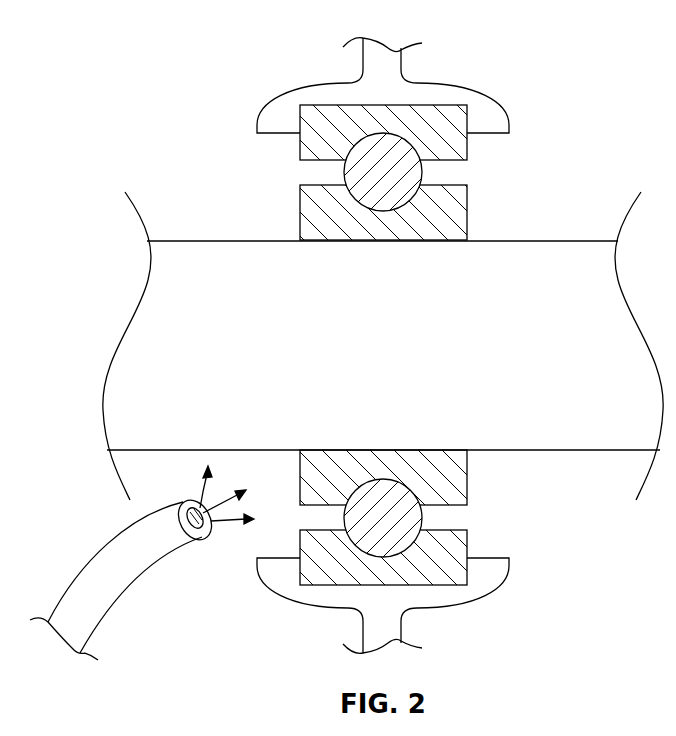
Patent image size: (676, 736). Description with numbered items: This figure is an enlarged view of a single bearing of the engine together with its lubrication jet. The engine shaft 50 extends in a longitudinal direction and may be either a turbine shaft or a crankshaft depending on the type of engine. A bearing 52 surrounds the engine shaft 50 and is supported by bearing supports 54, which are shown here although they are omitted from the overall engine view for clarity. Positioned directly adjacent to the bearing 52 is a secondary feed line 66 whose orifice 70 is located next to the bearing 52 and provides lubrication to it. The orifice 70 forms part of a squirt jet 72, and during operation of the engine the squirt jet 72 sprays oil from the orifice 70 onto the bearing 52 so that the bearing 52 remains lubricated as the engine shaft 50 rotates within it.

The engine shaft 50 is at (583, 241).
The bearing 52 is at (448, 140).
The bearing support 54 is at (472, 95).
The secondary feed line 66 is at (82, 613).
The orifice 70 is at (187, 508).
The squirt jet 72 is at (205, 555).